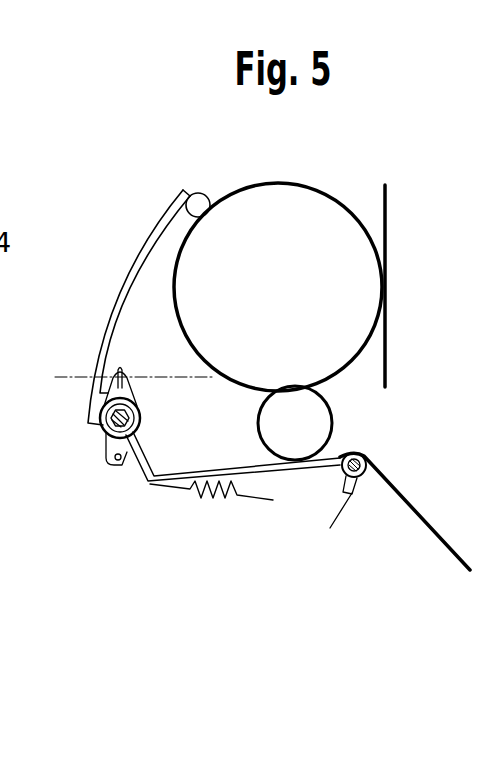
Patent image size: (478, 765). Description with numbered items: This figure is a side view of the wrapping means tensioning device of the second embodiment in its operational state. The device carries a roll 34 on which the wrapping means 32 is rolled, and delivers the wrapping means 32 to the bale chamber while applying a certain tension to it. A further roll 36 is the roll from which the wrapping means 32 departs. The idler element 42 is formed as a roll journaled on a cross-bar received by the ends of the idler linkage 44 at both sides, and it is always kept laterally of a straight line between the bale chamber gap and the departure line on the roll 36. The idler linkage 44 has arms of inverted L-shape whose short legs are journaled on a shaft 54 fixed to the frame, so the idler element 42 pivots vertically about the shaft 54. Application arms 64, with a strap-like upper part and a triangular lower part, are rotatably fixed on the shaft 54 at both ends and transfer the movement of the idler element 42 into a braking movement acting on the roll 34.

The wrapping means 32 is at (448, 552).
The roll 34 is at (292, 294).
The roll 36 is at (327, 422).
The idler element 42 is at (362, 480).
The idler linkage 44 is at (148, 484).
The shaft 54 is at (105, 432).
The application arms 64 is at (157, 217).